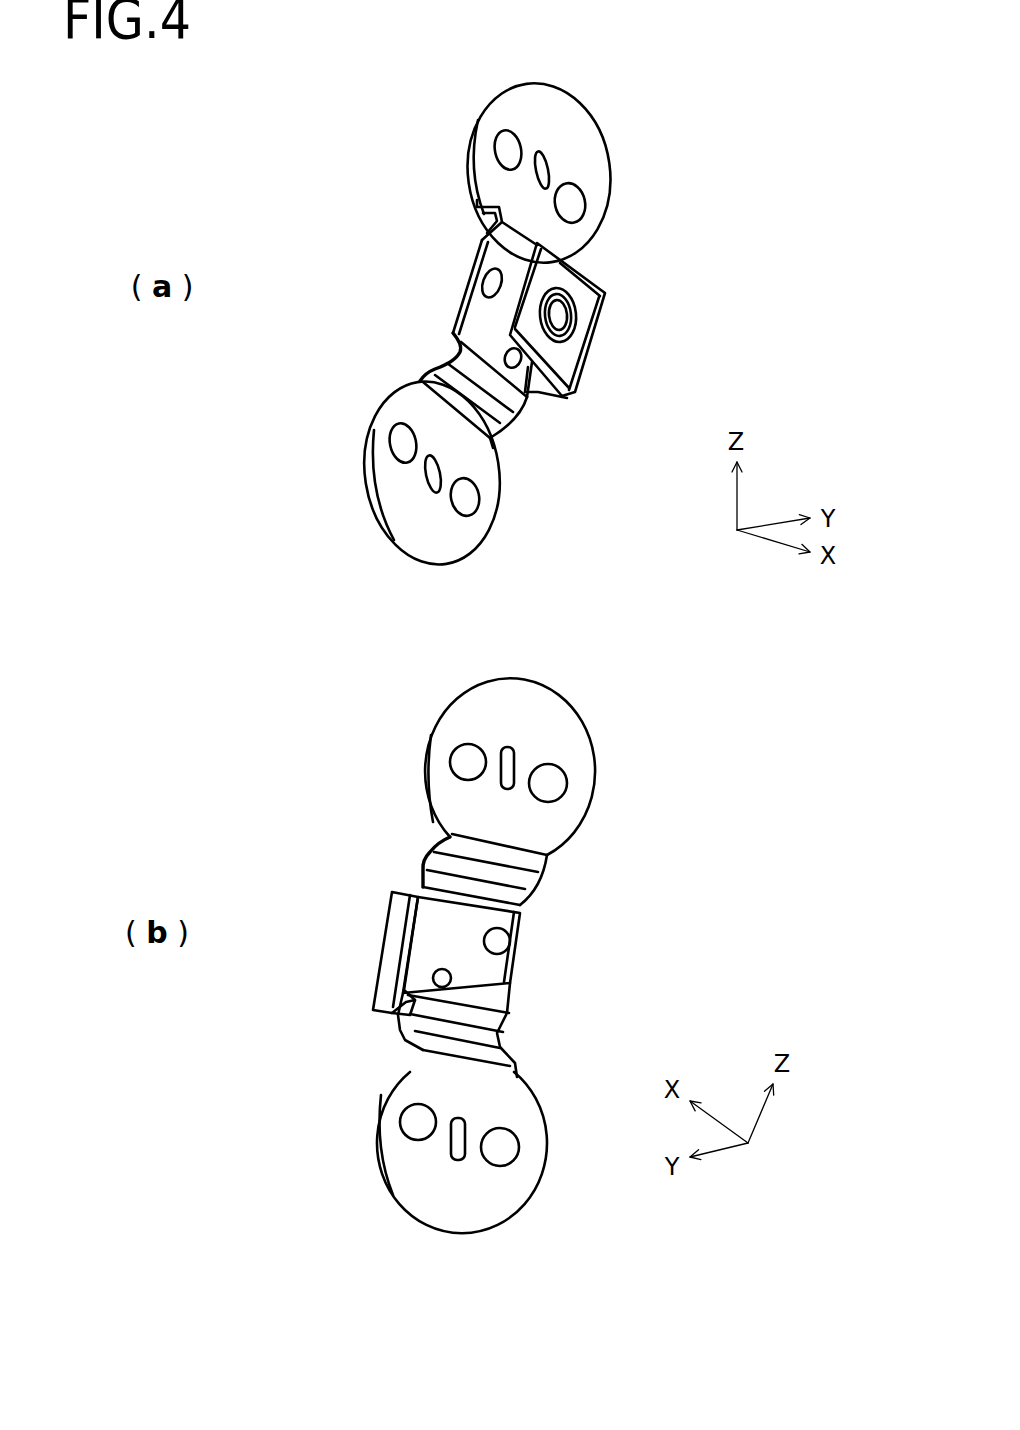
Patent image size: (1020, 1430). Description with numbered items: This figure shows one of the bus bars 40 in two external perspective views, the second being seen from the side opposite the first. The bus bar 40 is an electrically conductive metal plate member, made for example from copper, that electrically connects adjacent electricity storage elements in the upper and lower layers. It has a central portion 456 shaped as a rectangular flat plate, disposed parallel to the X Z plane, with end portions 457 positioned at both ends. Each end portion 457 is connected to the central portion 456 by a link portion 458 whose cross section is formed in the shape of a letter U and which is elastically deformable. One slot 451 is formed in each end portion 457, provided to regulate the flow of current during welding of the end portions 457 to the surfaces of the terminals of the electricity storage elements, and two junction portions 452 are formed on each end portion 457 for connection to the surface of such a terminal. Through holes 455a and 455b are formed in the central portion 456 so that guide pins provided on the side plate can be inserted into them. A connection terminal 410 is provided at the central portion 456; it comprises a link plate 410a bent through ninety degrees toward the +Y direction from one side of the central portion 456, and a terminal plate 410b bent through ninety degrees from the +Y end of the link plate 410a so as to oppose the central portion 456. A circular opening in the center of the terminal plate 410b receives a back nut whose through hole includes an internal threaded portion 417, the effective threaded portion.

The bus bar 40 is at (325, 130).
The connection terminal 410 is at (590, 358).
The link plate 410a is at (553, 395).
The terminal plate 410b is at (587, 293).
The internal threaded portion 417 is at (575, 318).
The slot 451 is at (533, 170).
The junction portions 452 is at (517, 133).
The through hole 455a is at (478, 277).
The through hole 455b is at (507, 358).
The central portion 456 is at (463, 297).
The end portions 457 is at (510, 84).
The link portion 458 is at (493, 230).